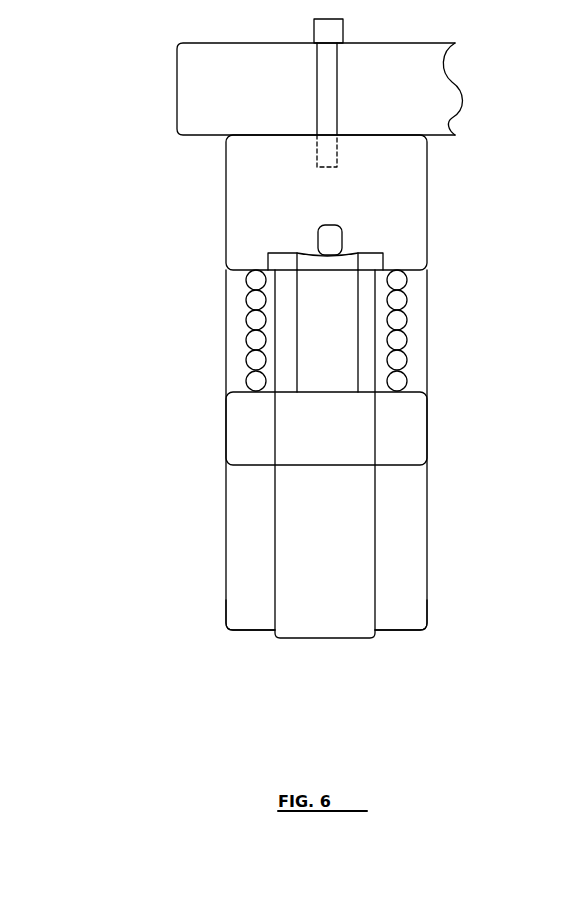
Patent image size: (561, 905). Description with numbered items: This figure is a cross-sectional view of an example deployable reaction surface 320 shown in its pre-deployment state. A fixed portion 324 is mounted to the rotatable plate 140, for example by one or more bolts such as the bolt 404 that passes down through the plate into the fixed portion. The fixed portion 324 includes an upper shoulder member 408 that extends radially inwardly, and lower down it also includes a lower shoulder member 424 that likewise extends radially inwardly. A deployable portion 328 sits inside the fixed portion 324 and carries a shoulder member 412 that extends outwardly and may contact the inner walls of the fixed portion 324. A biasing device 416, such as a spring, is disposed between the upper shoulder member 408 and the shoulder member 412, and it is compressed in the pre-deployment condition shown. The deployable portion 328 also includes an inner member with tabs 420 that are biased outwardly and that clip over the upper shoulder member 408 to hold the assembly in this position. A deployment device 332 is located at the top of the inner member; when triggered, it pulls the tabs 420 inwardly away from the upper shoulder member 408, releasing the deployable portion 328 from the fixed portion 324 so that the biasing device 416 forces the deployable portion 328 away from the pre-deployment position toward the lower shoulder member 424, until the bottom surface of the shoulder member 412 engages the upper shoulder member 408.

The rotatable plate 140 is at (320, 89).
The bolt 404 is at (315, 35).
The deployable reaction surface 320 is at (316, 464).
The fixed portion 324 is at (225, 237).
The deployment device 332 is at (318, 242).
The tabs 420 is at (278, 253).
The upper shoulder member 408 is at (206, 284).
The deployable portion 328 is at (375, 533).
The biasing device 416 is at (247, 334).
The shoulder member 412 is at (198, 424).
The lower shoulder member 424 is at (203, 631).